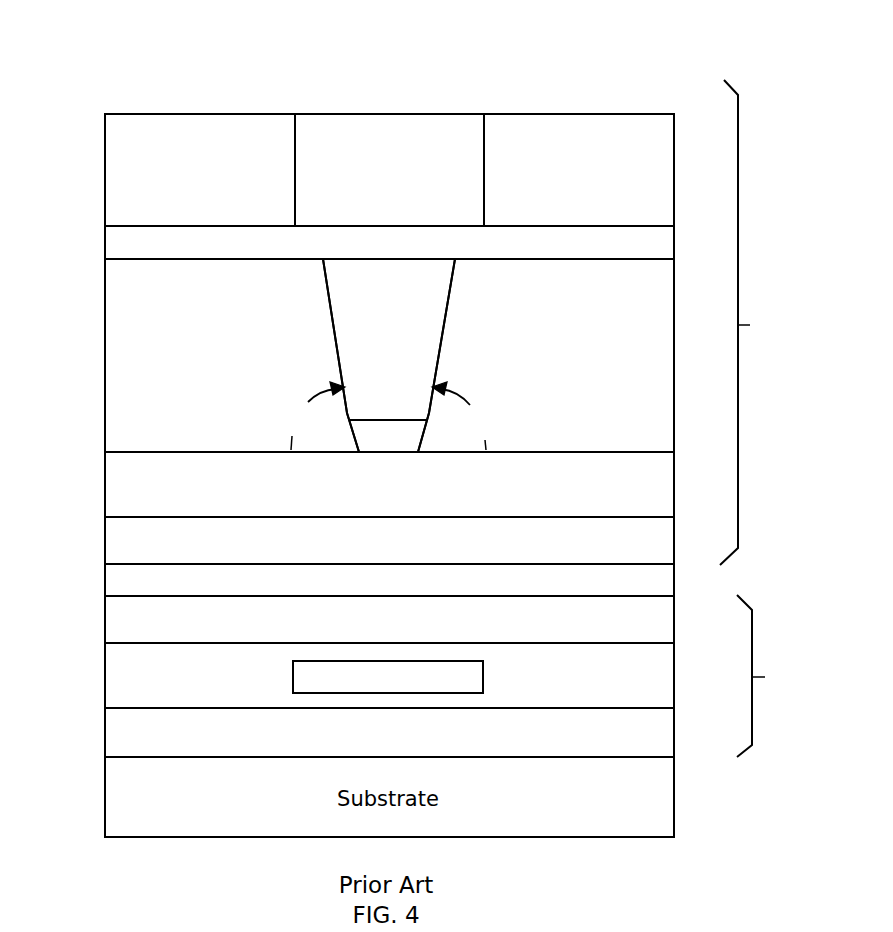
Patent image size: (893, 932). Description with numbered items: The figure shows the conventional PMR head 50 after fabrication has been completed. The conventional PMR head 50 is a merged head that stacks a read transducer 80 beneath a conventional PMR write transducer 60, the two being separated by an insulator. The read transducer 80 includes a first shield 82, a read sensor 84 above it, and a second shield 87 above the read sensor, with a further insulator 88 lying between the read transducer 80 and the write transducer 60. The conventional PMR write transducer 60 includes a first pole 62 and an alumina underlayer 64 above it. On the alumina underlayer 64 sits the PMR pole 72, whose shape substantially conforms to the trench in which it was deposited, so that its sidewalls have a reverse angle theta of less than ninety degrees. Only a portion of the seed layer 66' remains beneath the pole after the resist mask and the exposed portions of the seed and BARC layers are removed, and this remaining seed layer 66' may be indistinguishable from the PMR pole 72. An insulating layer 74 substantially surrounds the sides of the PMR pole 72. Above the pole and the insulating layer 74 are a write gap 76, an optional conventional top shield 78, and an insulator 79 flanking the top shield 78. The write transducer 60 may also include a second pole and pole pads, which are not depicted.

The conventional PMR head 50 is at (405, 29).
The conventional top shield 78 is at (404, 113).
The insulator 79 is at (105, 126).
The write gap 76 is at (120, 226).
The insulating layer 74 is at (104, 345).
The PMR pole 72 is at (328, 287).
The seed layer 66' is at (543, 463).
The alumina underlayer 64 is at (104, 500).
The first pole 62 is at (674, 551).
The conventional PMR write transducer 60 is at (750, 322).
The insulator 88 is at (104, 582).
The second shield 87 is at (674, 628).
The read sensor 84 is at (293, 677).
The first shield 82 is at (674, 740).
The read transducer 80 is at (766, 676).